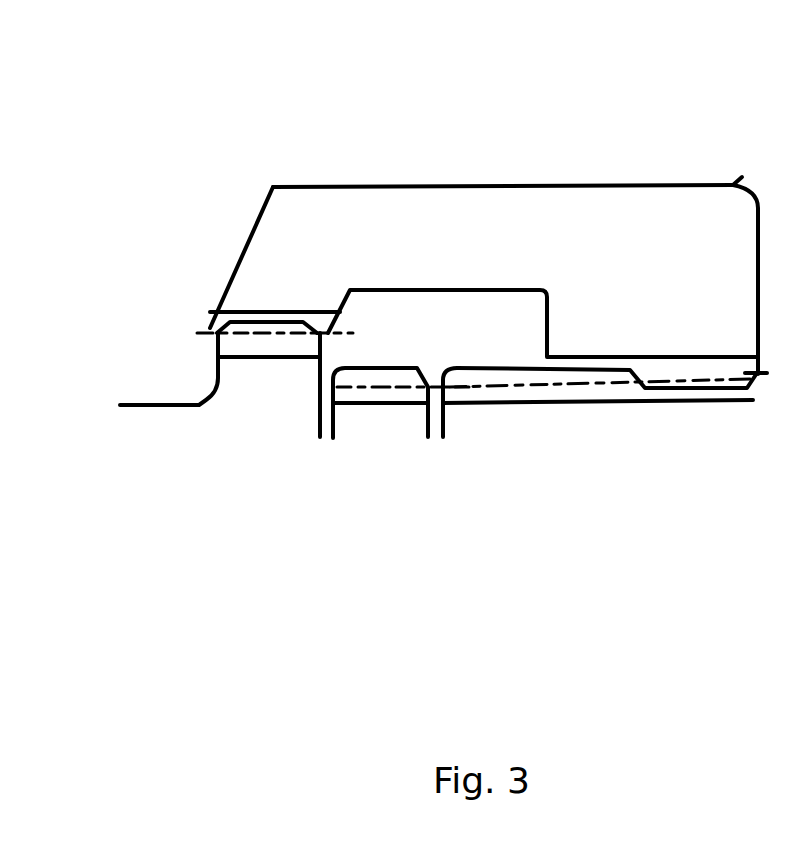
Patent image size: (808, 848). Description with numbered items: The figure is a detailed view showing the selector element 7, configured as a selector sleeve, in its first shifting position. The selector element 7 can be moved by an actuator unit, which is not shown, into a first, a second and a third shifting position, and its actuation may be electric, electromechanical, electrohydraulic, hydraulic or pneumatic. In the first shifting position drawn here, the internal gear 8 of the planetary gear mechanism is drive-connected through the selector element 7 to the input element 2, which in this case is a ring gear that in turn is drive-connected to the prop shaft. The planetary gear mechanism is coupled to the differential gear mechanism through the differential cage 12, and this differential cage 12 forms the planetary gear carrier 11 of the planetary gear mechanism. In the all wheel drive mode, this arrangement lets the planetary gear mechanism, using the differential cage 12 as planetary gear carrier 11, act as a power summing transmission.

The input element 2 is at (247, 417).
The selector element 7 is at (478, 238).
The internal gear 8 is at (582, 430).
The planetary gear carrier 11 is at (373, 417).
The differential cage 12 is at (401, 403).